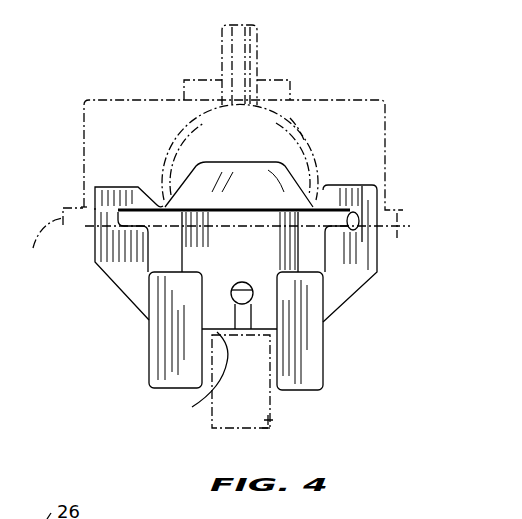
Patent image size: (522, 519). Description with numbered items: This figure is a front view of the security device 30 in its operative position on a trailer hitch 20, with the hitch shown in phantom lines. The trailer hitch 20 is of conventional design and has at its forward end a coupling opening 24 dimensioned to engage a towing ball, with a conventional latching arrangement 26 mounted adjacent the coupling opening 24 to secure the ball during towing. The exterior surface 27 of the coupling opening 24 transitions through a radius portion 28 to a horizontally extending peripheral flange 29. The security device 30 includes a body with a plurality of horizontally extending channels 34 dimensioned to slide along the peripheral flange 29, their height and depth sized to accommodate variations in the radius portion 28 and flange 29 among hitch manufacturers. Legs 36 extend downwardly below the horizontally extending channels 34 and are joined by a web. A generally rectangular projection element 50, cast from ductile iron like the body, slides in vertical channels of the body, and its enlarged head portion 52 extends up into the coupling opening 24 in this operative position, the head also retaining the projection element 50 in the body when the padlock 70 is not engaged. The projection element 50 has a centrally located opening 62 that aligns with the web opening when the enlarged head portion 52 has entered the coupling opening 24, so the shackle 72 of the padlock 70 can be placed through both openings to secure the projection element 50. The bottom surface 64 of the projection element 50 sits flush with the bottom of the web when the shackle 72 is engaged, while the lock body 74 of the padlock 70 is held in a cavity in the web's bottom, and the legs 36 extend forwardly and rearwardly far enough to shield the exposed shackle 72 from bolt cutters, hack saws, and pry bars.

The trailer hitch 20 is at (322, 128).
The coupling opening 24 is at (299, 131).
The latching arrangement 26 is at (212, 52).
The exterior surface 27 is at (313, 152).
The radius portion 28 is at (150, 202).
The horizontally extending peripheral flange 29 is at (393, 262).
The security device 30 is at (108, 311).
The horizontally extending channels 34 is at (135, 212).
The legs 36 is at (157, 363).
The projection element 50 is at (256, 262).
The enlarged head portion 52 is at (252, 195).
The centrally located opening 62 is at (230, 300).
The bottom surface 64 is at (198, 374).
The padlock 70 is at (186, 416).
The shackle 72 is at (252, 281).
The lock body 74 is at (273, 421).